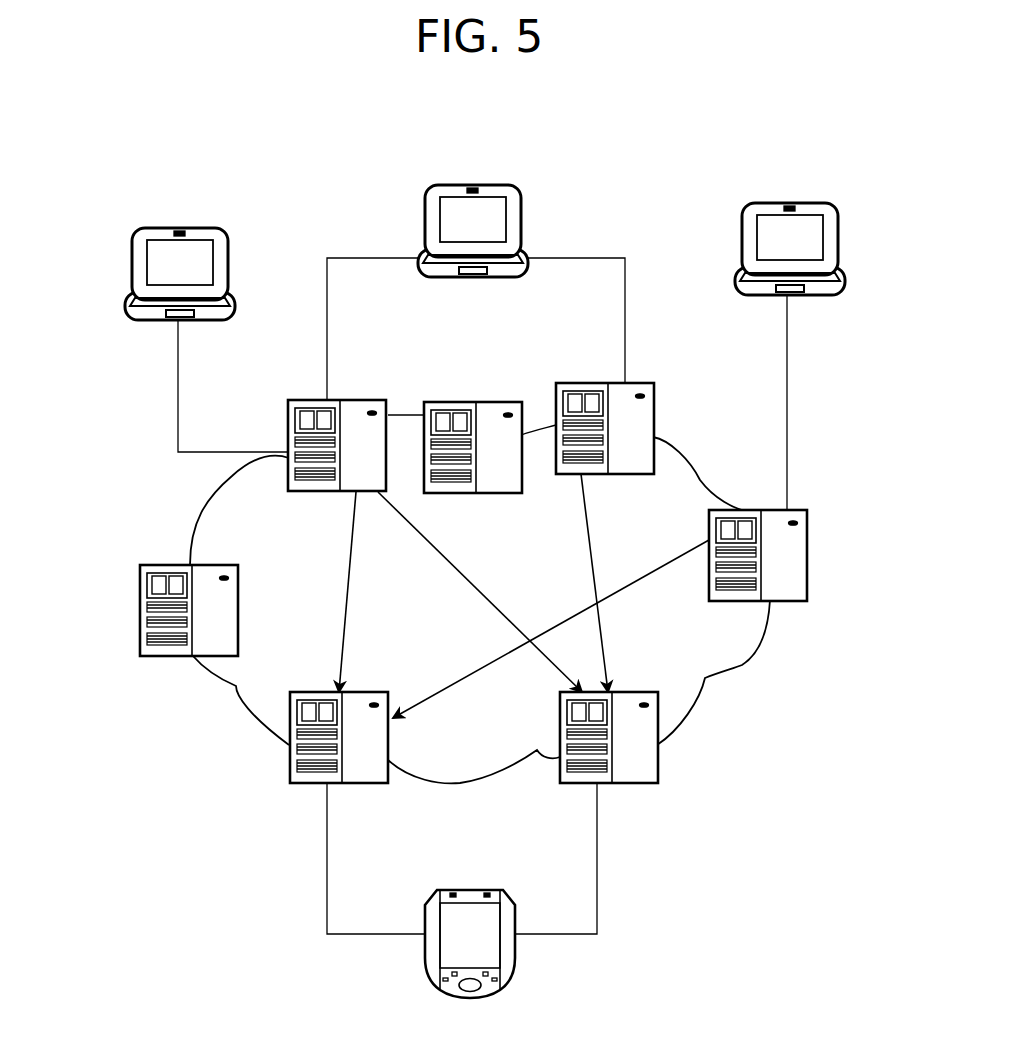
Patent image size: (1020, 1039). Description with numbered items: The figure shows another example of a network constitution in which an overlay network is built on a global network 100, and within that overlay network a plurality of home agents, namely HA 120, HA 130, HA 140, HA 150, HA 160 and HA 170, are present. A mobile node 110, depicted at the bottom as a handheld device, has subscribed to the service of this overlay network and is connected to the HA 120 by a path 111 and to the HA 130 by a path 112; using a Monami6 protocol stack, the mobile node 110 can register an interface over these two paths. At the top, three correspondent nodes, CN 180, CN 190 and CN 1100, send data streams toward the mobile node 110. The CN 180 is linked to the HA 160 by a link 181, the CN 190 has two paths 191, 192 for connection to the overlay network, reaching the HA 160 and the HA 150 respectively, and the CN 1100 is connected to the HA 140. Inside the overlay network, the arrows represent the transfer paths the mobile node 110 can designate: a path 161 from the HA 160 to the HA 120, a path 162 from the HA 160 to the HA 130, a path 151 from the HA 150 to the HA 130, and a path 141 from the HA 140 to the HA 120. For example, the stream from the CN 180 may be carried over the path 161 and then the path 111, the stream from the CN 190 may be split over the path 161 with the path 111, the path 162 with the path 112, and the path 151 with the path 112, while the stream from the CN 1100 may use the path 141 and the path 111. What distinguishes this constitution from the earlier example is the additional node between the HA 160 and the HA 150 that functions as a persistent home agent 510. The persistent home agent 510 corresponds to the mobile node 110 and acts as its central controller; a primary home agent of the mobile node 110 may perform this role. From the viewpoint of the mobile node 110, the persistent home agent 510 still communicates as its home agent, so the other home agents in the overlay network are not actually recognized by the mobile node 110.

The global network 100 is at (735, 676).
The mobile node 110 is at (425, 970).
The path 111 is at (327, 845).
The path 112 is at (597, 870).
The home agent 120 is at (290, 768).
The home agent 130 is at (657, 765).
The home agent 140 is at (806, 548).
The path 141 is at (448, 692).
The home agent 150 is at (653, 425).
The path 151 is at (588, 550).
The home agent 160 is at (300, 400).
The path 161 is at (345, 640).
The path 162 is at (417, 537).
The home agent 170 is at (140, 592).
The correspondent node 180 is at (178, 228).
The link between correspondent node 180 and home agent 160 181 is at (216, 450).
The correspondent node 190 is at (472, 185).
The path 191 is at (327, 312).
The path 192 is at (625, 340).
The persistent home agent 510 is at (465, 402).
The correspondent node 1100 is at (790, 203).